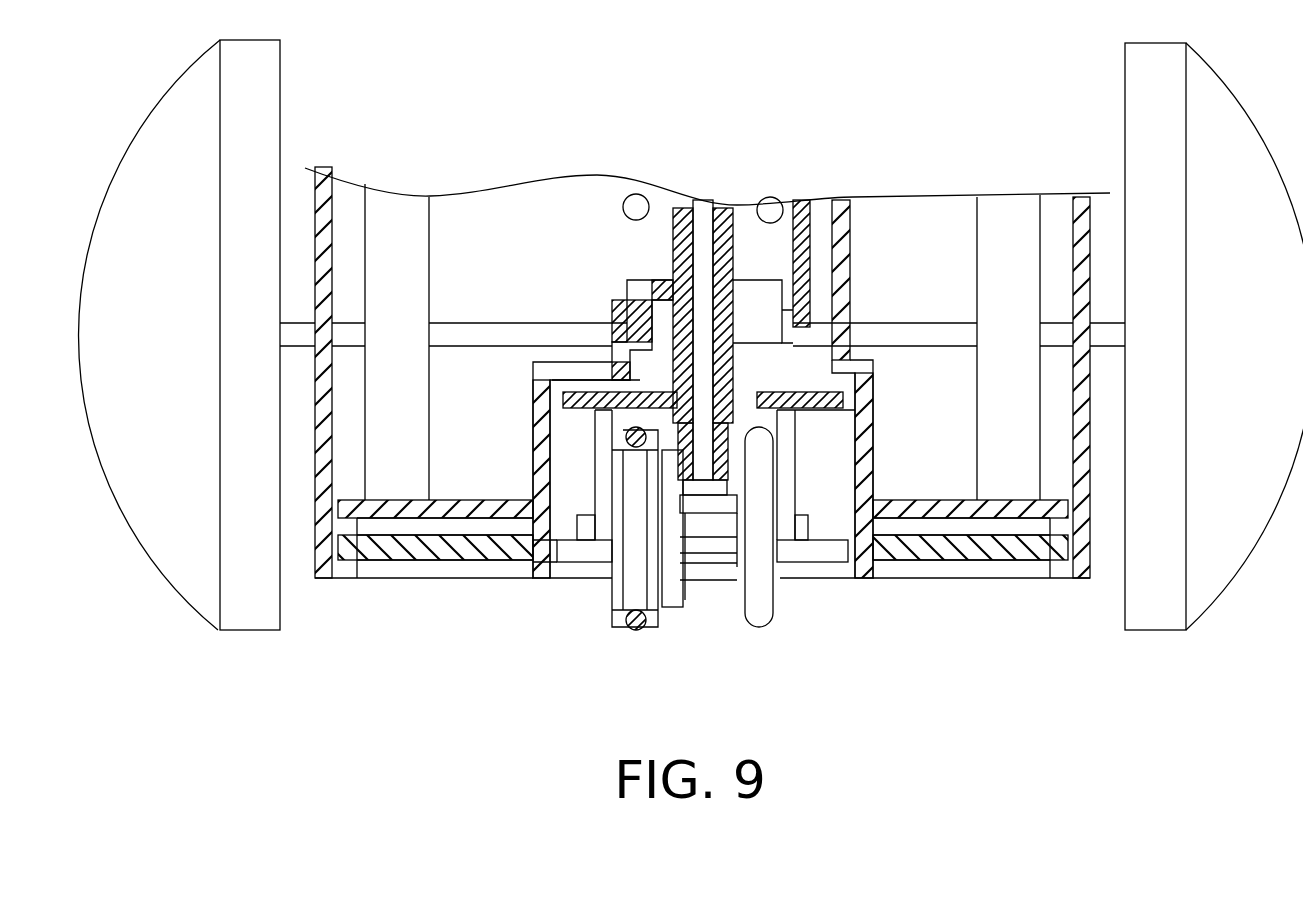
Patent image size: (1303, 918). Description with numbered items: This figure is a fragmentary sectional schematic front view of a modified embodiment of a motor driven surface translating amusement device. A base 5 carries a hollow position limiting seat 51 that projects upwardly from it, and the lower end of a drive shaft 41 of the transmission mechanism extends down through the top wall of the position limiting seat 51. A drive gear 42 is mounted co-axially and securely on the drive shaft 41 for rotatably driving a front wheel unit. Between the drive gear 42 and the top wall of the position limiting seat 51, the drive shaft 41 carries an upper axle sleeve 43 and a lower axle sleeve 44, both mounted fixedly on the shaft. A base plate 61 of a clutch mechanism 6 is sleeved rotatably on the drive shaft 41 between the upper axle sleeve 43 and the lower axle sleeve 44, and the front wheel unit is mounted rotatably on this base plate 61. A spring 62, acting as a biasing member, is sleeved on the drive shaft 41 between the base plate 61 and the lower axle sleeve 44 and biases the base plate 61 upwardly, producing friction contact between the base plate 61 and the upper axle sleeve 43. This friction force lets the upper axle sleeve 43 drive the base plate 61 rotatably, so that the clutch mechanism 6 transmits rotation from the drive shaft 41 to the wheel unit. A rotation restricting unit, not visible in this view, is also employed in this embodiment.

The base 5 is at (348, 548).
The position limiting seat 51 is at (540, 462).
The clutch mechanism 6 is at (588, 455).
The spring 62 is at (620, 300).
The drive shaft 41 is at (703, 203).
The upper axle sleeve 43 is at (735, 300).
The base plate 61 is at (793, 327).
The drive gear 42 is at (738, 490).
The lower axle sleeve 44 is at (735, 417).